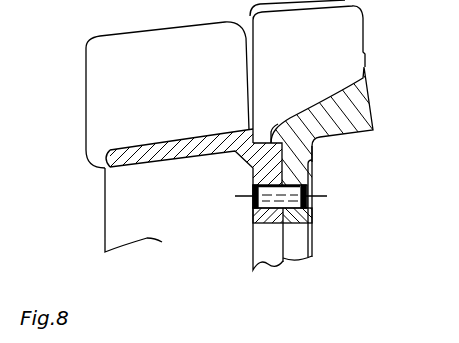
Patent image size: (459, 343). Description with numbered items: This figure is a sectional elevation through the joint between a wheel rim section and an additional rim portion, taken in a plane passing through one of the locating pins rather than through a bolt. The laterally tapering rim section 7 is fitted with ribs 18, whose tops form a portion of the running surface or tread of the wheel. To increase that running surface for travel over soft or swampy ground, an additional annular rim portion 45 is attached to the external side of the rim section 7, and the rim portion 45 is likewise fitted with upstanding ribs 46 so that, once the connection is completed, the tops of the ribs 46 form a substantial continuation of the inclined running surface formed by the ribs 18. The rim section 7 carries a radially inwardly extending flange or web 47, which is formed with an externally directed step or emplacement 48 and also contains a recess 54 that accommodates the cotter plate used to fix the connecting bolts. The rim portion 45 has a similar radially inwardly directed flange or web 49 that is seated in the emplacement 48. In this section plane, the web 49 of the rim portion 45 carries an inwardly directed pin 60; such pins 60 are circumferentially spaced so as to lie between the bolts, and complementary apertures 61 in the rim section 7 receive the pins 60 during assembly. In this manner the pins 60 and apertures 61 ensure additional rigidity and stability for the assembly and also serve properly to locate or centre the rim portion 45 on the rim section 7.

The upstanding ribs 46 is at (188, 85).
The ribs 18 is at (300, 66).
The externally directed step or emplacement 48 is at (280, 141).
The rim section 7 is at (350, 122).
The recess 54 is at (310, 163).
The additional annular rim portion 45 is at (218, 145).
The inwardly directed pins 60 is at (255, 204).
The complementary apertures 61 is at (307, 212).
The radially inwardly directed flange or web 49 is at (253, 225).
The radially inwardly extending flange or web 47 is at (299, 220).